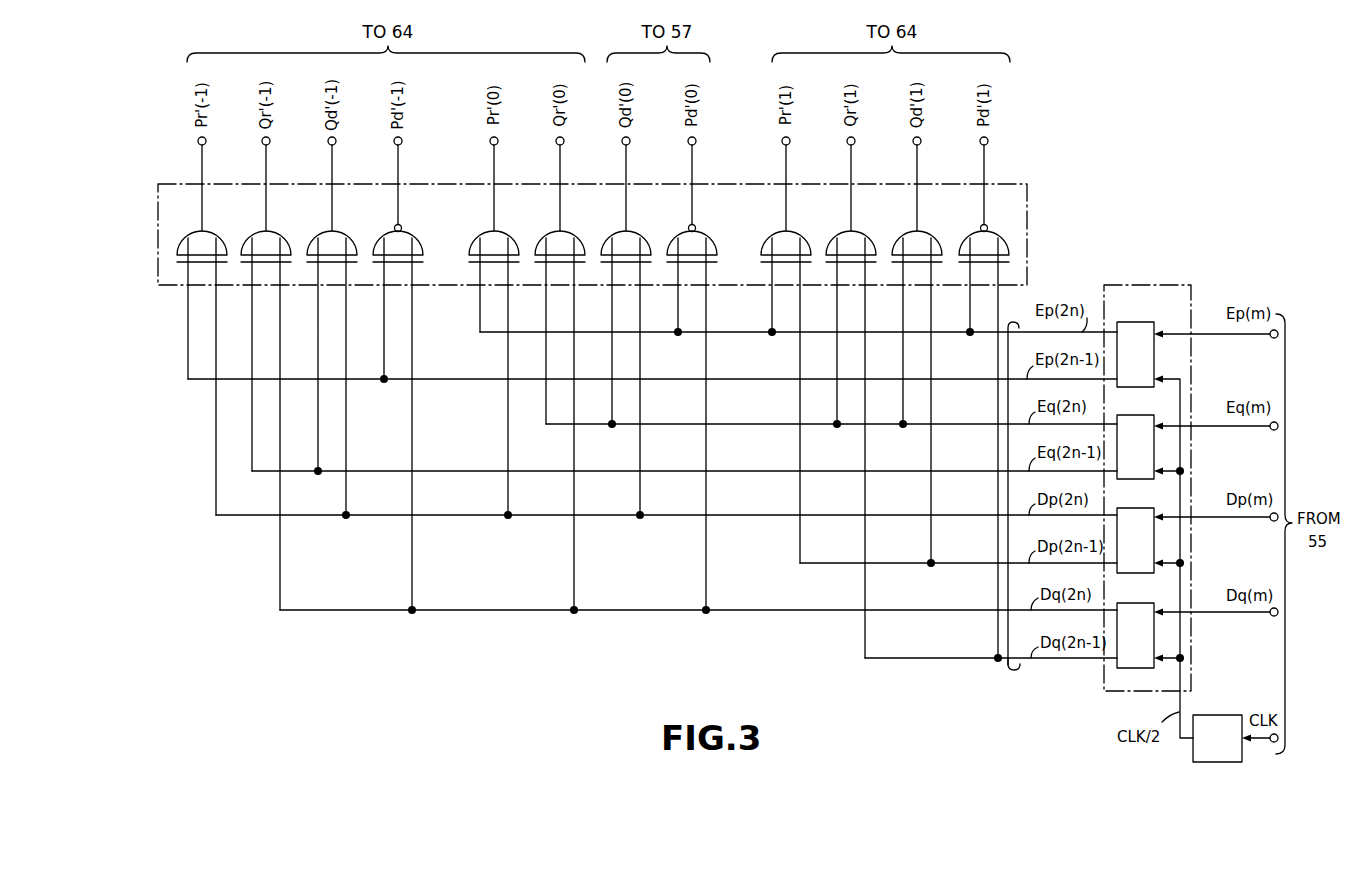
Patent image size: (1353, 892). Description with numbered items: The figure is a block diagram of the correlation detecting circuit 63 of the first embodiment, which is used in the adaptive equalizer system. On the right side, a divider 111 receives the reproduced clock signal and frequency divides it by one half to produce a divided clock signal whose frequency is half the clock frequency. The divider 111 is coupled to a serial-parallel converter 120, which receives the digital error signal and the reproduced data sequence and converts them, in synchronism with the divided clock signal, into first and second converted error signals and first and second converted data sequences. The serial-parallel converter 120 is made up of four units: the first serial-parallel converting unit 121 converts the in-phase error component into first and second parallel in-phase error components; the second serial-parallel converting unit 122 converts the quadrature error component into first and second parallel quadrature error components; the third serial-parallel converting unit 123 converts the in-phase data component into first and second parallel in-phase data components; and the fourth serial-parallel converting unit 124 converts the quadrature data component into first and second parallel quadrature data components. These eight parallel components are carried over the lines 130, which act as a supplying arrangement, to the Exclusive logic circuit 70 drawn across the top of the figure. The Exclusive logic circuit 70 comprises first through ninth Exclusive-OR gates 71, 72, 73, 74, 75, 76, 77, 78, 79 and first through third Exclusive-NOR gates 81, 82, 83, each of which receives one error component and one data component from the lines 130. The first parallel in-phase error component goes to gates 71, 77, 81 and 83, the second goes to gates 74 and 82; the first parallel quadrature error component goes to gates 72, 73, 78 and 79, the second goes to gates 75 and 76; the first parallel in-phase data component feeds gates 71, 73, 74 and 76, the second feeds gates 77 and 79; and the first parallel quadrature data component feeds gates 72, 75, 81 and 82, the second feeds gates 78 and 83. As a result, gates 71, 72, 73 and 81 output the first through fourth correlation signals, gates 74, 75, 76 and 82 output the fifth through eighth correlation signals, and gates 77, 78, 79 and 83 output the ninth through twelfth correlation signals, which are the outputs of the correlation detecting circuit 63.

The correlation detecting circuit 63 is at (468, 644).
The Exclusive logic circuit 70 is at (1027, 232).
The first Exclusive-OR gate 71 is at (500, 231).
The second Exclusive-OR gate 72 is at (566, 231).
The third Exclusive-OR gate 73 is at (632, 231).
The fourth Exclusive-OR gate 74 is at (208, 231).
The fifth Exclusive-OR gate 75 is at (272, 231).
The sixth Exclusive-OR gate 76 is at (338, 231).
The seventh Exclusive-OR gate 77 is at (792, 231).
The eighth Exclusive-OR gate 78 is at (857, 231).
The ninth Exclusive-OR gate 79 is at (923, 231).
The first Exclusive-NOR gate 81 is at (698, 231).
The second Exclusive-NOR gate 82 is at (404, 231).
The third Exclusive-NOR gate 83 is at (990, 231).
The divider 111 is at (1212, 717).
The serial-parallel converter 120 is at (1143, 285).
The first serial-parallel converting unit 121 is at (1124, 321).
The second serial-parallel converting unit 122 is at (1125, 414).
The third serial-parallel converting unit 123 is at (1125, 508).
The fourth serial-parallel converting unit 124 is at (1125, 603).
The lines 130 is at (1008, 686).